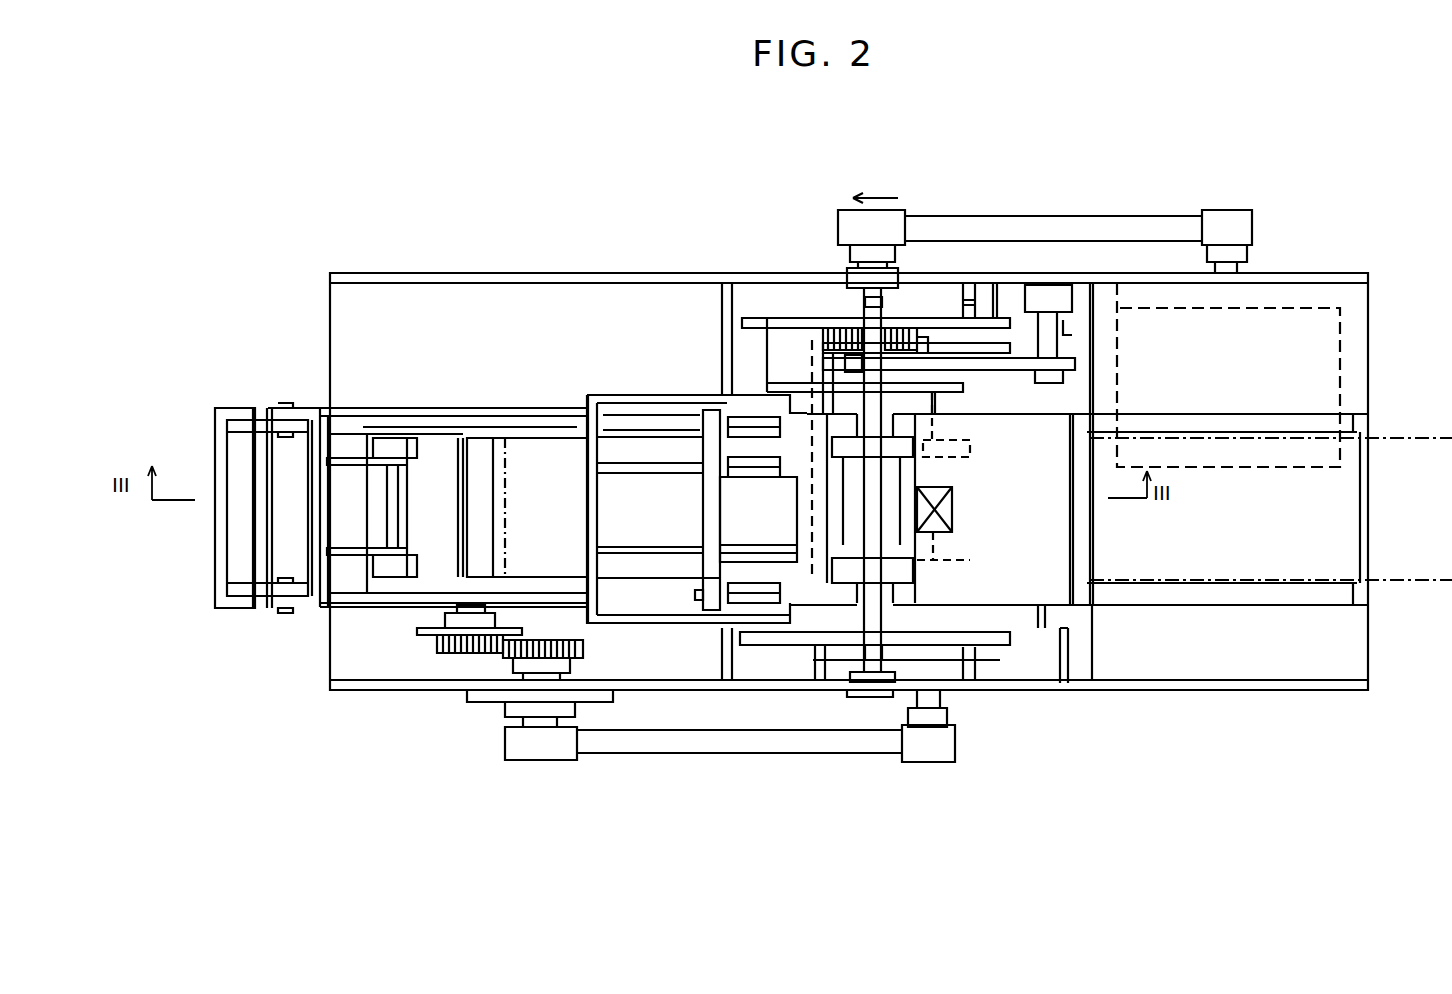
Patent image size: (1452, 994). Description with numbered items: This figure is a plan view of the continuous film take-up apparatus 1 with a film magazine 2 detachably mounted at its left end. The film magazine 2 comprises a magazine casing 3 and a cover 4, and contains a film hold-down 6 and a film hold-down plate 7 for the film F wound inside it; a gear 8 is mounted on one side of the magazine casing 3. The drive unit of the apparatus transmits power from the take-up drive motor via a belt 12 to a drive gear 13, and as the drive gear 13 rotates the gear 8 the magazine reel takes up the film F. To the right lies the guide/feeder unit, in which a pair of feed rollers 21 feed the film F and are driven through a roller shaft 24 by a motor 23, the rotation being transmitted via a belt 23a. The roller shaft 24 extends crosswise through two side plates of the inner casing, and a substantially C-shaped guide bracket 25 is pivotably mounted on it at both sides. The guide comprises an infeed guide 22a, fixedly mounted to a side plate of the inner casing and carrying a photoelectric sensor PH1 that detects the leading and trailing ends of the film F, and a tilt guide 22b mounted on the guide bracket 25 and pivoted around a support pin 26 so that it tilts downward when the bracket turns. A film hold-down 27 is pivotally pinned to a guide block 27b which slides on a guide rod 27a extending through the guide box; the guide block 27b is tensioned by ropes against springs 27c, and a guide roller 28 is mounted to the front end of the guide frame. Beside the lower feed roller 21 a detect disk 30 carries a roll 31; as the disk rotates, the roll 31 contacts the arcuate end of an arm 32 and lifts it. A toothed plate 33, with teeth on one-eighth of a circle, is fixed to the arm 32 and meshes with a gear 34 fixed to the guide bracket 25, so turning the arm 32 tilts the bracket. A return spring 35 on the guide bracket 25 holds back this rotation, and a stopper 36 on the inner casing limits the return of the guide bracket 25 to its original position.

The continuous film take-up apparatus 1 is at (588, 256).
The film magazine 2 is at (238, 388).
The magazine casing 3 is at (312, 408).
The cover 4 is at (218, 443).
The film hold-down 6 is at (348, 447).
The film hold-down plate 7 is at (435, 447).
The gear 8 is at (440, 640).
The belt 12 is at (590, 755).
The drive gear 13 is at (540, 660).
The feed rollers 21 is at (967, 577).
The infeed guide 22a is at (1045, 605).
The tilt guide 22b is at (650, 623).
The motor 23 is at (1300, 290).
The belt 23a is at (1068, 215).
The roller shaft 24 is at (857, 303).
The guide bracket 25 is at (770, 650).
The support pin 26 is at (820, 640).
The film hold-down 27 is at (620, 463).
The guide rod 27a is at (640, 442).
The guide block 27b is at (695, 457).
The springs 27c is at (747, 413).
The guide roller 28 is at (480, 447).
The detect disk 30 is at (783, 383).
The roll 31 is at (812, 350).
The arm 32 is at (1020, 365).
The toothed plate 33 is at (982, 355).
The gear 34 is at (907, 322).
The return spring 35 is at (968, 290).
The stopper 36 is at (1040, 295).
The photoelectric sensor PH1 is at (950, 510).
The film F is at (515, 445).